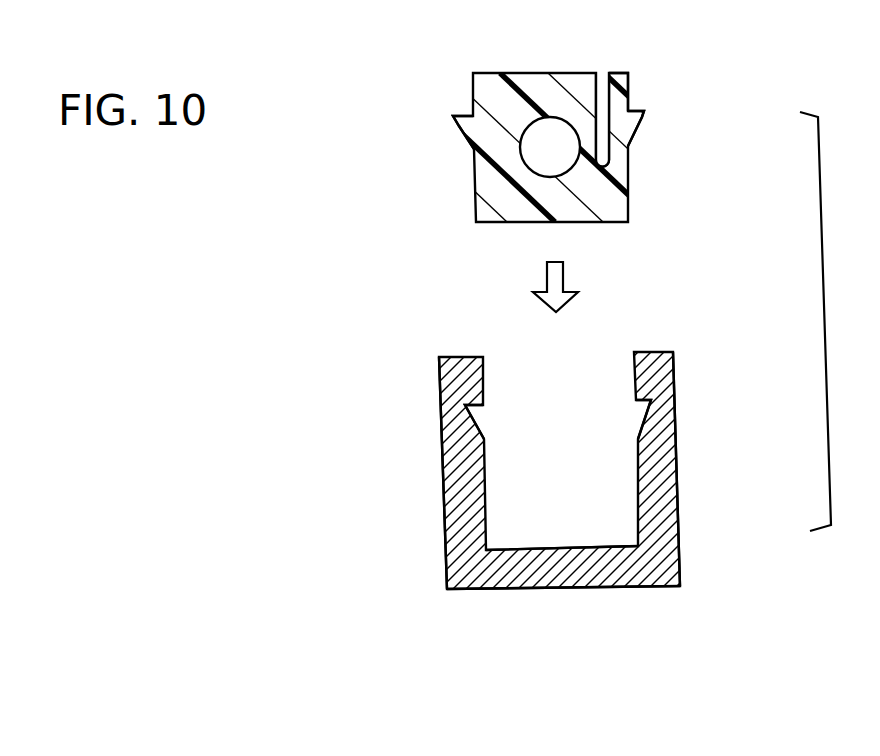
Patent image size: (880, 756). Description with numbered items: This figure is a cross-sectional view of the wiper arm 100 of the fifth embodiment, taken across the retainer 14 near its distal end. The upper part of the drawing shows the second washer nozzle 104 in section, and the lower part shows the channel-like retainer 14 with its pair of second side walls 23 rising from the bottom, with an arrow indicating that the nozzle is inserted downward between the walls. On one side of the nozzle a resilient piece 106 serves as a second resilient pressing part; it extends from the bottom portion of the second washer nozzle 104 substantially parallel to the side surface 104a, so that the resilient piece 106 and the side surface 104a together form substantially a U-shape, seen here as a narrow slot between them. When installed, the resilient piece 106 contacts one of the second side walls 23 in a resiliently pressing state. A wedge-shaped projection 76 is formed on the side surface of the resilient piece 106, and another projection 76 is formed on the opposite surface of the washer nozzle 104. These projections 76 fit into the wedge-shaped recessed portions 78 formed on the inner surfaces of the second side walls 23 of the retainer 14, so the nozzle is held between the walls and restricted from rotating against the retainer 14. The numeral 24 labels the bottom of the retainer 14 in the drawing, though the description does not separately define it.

The wiper arm 100 is at (372, 243).
The second washer nozzle 104 is at (519, 72).
The side surface 104a is at (598, 75).
The resilient piece 106 is at (626, 78).
The projection 76 is at (460, 126).
The recessed portion 78 is at (467, 407).
The retainer 14 is at (520, 589).
The second side wall 23 is at (443, 480).
The bottom wall 24 is at (577, 579).